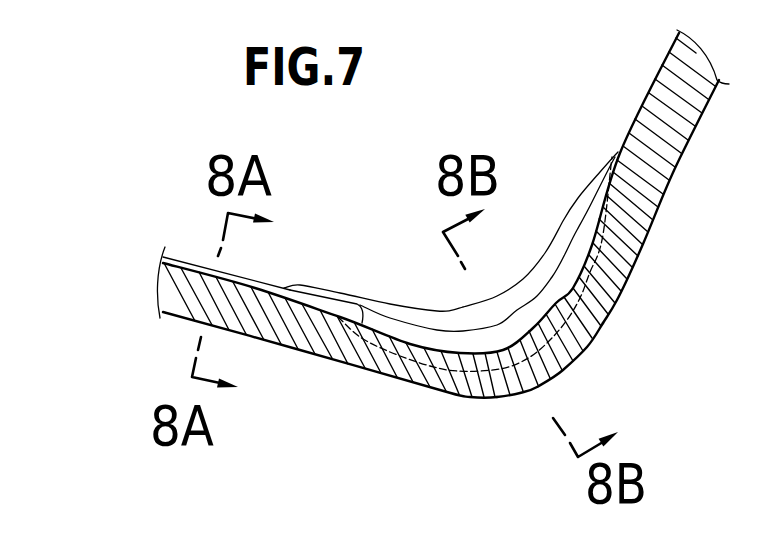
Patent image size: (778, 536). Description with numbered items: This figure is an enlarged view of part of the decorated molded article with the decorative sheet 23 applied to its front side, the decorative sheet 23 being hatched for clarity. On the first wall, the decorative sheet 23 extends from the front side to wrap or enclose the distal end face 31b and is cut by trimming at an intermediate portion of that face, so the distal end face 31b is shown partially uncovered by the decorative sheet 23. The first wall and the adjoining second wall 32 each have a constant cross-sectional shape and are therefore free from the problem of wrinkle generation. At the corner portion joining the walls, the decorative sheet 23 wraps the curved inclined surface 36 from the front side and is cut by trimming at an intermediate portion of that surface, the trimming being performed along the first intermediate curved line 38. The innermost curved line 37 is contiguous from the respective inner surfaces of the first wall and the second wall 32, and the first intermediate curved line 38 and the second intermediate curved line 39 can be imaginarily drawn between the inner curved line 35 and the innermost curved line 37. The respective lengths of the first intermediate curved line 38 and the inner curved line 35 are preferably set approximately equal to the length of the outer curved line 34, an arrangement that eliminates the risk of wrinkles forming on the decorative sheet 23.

The decorative sheet 23 is at (623, 268).
The distal end face 31b is at (185, 263).
The second wall 32 is at (665, 198).
The outer curved line 34 is at (430, 388).
The inner curved line 35 is at (390, 350).
The curved inclined surface 36 is at (534, 313).
The innermost curved line 37 is at (393, 300).
The first intermediate curved line 38 is at (360, 306).
The second intermediate curved line 39 is at (432, 320).